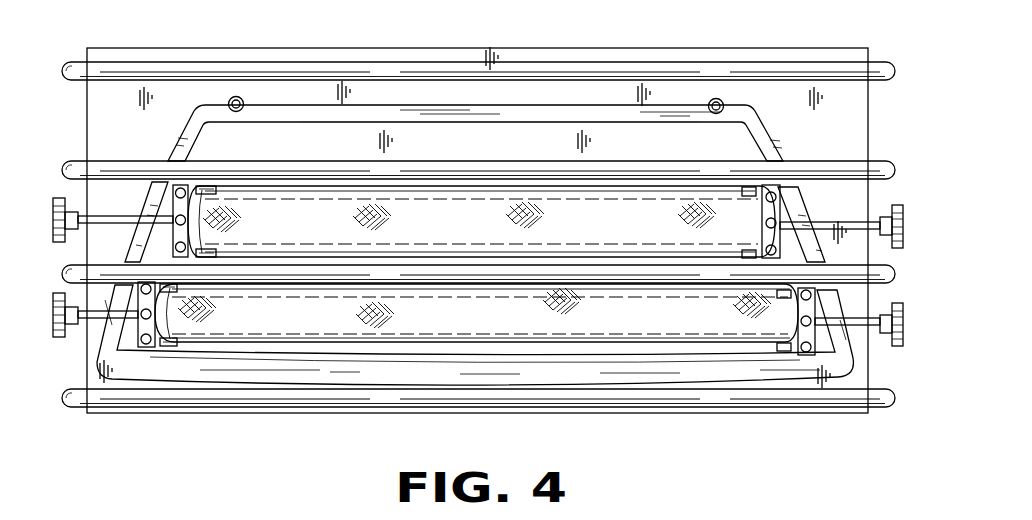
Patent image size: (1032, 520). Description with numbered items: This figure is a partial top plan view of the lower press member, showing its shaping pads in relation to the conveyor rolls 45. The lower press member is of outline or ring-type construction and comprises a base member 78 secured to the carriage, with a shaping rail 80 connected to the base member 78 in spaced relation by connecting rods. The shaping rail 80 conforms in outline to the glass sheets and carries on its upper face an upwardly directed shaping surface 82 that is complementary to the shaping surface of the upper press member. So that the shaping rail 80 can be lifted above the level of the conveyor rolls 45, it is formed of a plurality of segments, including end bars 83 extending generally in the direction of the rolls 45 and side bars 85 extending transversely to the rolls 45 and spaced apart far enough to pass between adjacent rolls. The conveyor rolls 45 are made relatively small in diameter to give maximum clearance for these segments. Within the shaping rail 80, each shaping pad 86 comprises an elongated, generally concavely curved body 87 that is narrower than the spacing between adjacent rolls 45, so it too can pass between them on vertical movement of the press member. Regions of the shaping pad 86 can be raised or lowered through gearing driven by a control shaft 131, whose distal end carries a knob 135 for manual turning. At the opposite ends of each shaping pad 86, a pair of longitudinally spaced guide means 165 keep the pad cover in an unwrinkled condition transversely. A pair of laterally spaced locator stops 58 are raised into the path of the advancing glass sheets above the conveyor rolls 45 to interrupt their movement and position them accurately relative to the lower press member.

The conveyor rolls 45 is at (108, 166).
The locator stops 58 is at (236, 96).
The base member 78 is at (790, 57).
The shaping rail 80 is at (474, 100).
The shaping surface 82 is at (388, 117).
The end bars 83 is at (284, 106).
The side bars 85 is at (150, 204).
The shaping pad 86 is at (480, 186).
The body 87 is at (386, 199).
The control shaft 131 is at (840, 221).
The knob 135 is at (68, 236).
The guide means 165 is at (208, 182).